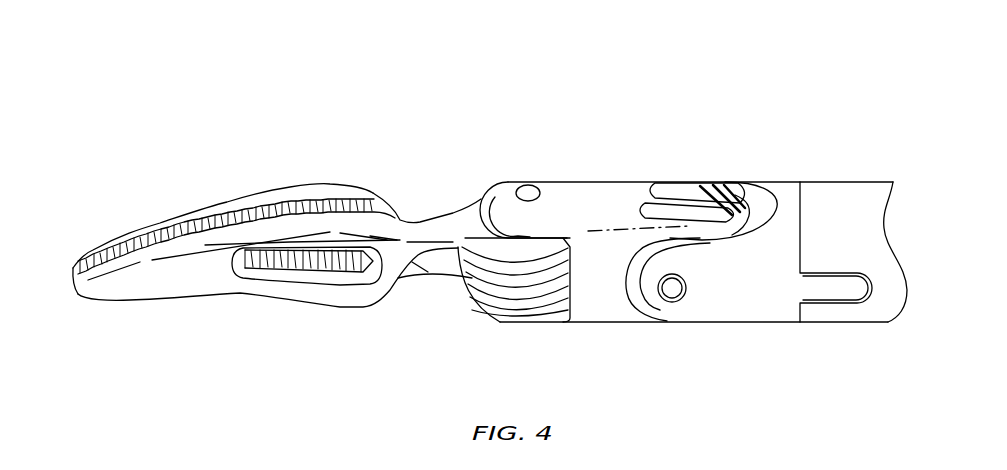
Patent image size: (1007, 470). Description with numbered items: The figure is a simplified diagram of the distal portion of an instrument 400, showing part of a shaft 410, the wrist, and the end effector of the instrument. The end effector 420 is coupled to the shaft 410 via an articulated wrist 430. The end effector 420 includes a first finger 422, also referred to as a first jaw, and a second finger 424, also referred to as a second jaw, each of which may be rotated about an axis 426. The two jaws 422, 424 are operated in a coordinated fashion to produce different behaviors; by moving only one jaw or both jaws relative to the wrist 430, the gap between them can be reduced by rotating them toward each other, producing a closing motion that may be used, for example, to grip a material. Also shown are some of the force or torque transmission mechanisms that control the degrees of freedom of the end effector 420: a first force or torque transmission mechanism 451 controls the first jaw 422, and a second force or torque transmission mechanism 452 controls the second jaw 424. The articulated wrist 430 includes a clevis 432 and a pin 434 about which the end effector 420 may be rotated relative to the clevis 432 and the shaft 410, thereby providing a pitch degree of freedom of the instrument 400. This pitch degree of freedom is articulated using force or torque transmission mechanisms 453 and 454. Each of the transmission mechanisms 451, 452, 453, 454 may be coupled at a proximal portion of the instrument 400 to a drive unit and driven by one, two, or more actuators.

The instrument 400 is at (137, 52).
The shaft 410 is at (840, 172).
The end effector 420 is at (540, 133).
The first finger 422 is at (243, 190).
The second finger 424 is at (253, 300).
The axis 426 is at (527, 188).
The articulated wrist 430 is at (803, 93).
The clevis 432 is at (780, 322).
The pin 434 is at (673, 302).
The first force or torque transmission mechanism 451 is at (603, 352).
The second force or torque transmission mechanism 452 is at (543, 298).
The force or torque transmission mechanism 453 is at (668, 208).
The force or torque transmission mechanism 454 is at (716, 205).